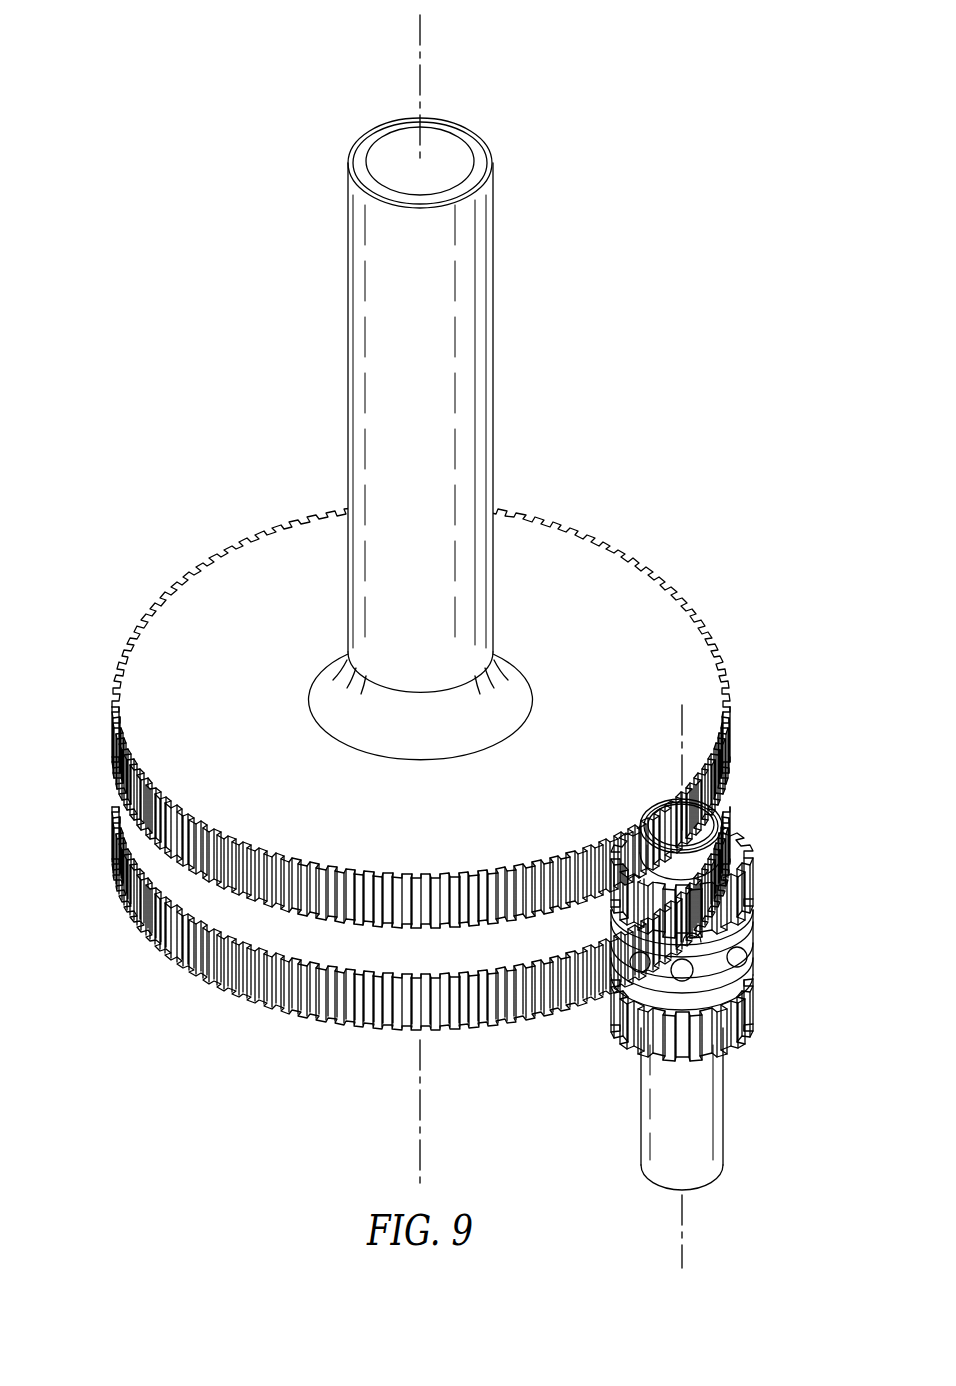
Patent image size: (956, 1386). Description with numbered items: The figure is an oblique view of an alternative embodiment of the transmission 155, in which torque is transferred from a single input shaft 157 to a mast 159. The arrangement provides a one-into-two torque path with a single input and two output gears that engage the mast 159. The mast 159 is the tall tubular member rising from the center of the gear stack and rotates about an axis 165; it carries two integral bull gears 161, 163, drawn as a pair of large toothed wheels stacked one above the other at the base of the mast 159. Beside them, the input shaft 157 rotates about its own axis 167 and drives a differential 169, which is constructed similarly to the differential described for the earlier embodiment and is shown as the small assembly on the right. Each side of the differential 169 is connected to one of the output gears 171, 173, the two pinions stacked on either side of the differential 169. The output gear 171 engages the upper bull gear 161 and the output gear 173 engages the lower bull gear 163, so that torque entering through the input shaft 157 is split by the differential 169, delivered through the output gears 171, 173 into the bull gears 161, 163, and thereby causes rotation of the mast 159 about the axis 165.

The transmission 155 is at (284, 56).
The input shaft 157 is at (726, 1112).
The mast 159 is at (345, 346).
The bull gear 161 is at (112, 712).
The bull gear 163 is at (112, 832).
The axis 165 is at (418, 1115).
The axis 167 is at (685, 1268).
The differential 169 is at (770, 930).
The output gear 171 is at (755, 880).
The output gear 173 is at (755, 990).